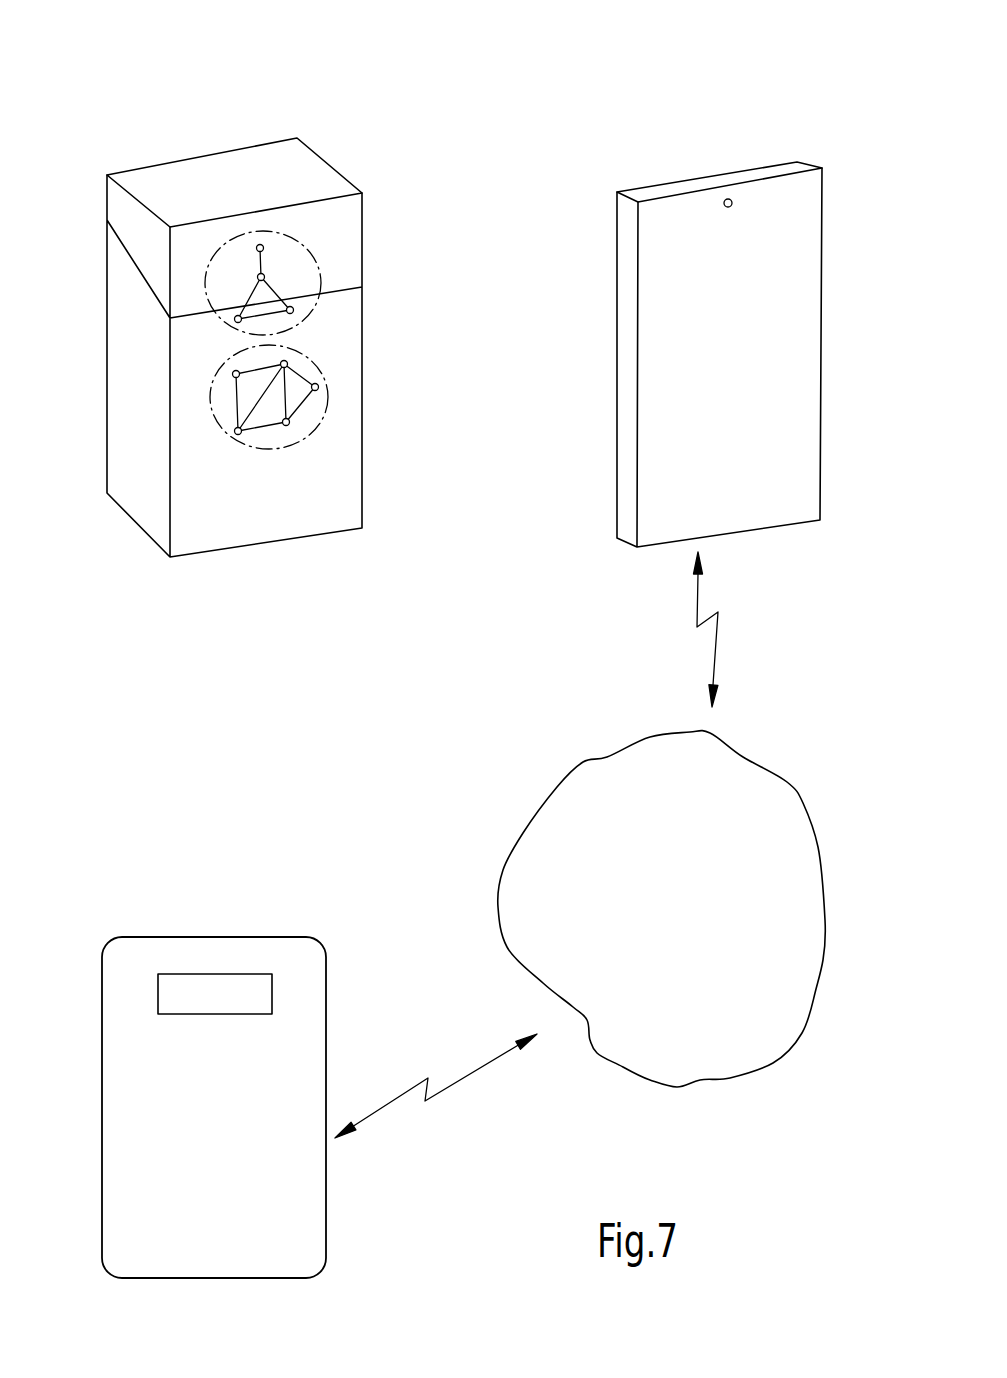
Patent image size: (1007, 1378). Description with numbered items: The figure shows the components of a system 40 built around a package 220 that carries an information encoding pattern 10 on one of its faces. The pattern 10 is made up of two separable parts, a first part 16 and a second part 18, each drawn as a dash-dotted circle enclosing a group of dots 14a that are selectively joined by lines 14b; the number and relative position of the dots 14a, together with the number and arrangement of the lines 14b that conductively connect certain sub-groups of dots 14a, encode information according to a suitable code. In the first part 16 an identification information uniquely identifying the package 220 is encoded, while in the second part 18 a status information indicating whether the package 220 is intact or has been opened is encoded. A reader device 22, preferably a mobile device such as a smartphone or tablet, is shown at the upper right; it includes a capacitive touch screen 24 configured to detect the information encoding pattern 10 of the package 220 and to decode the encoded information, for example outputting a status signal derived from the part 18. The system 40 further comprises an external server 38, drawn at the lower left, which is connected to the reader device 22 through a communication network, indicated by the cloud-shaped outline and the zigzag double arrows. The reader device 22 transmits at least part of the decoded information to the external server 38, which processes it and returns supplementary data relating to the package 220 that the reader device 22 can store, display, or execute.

The package 220 is at (146, 126).
The information encoding pattern 10 is at (189, 339).
The second part of the information encoding pattern 18 is at (300, 238).
The first part of the information encoding pattern 16 is at (258, 447).
The dots 14a is at (261, 277).
The lines 14b is at (238, 319).
The reader device 22 is at (698, 175).
The capacitive touch screen 24 is at (757, 322).
The external server 38 is at (207, 935).
The system 40 is at (401, 681).